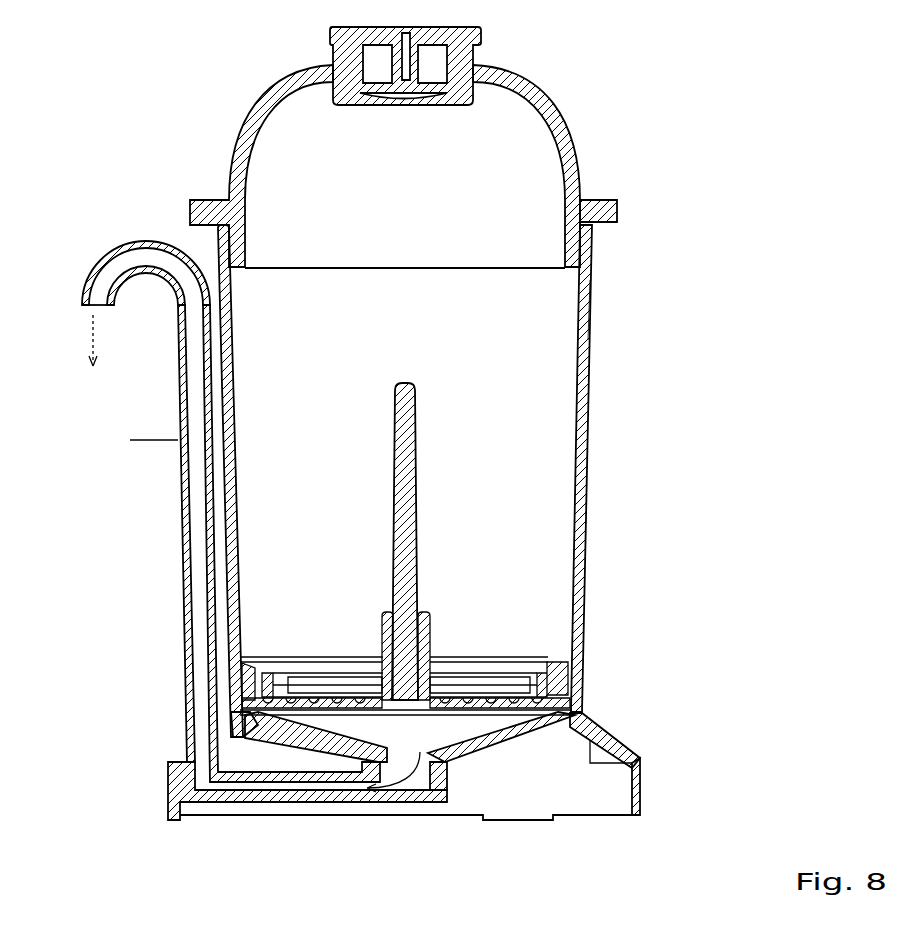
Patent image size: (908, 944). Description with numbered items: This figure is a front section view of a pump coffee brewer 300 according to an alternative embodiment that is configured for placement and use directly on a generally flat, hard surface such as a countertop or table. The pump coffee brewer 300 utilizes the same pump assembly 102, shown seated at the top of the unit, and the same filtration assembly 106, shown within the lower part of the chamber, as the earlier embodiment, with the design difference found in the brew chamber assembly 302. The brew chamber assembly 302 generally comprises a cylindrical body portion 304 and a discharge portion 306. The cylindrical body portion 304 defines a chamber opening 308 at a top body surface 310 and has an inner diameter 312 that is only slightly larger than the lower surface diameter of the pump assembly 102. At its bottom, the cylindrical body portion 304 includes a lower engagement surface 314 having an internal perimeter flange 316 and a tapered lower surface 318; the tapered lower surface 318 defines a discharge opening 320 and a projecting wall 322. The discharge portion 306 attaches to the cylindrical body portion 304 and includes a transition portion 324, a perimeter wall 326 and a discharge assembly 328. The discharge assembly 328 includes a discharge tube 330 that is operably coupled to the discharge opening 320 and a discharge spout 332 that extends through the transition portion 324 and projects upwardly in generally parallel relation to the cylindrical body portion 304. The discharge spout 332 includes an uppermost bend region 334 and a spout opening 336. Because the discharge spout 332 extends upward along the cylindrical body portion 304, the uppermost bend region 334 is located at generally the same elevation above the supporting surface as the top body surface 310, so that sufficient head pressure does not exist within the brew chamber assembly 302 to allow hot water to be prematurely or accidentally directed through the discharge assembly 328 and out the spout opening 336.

The pump assembly 102 is at (576, 148).
The filtration assembly 106 is at (417, 513).
The pump coffee brewer 300 is at (763, 393).
The brew chamber assembly 302 is at (590, 362).
The cylindrical body portion 304 is at (592, 305).
The discharge portion 306 is at (640, 757).
The chamber opening 308 is at (405, 277).
The top body surface 310 is at (590, 222).
The inner diameter 312 is at (566, 340).
The lower engagement surface 314 is at (572, 711).
The internal perimeter flange 316 is at (247, 708).
The tapered lower surface 318 is at (300, 733).
The discharge opening 320 is at (402, 752).
The projecting wall 322 is at (435, 777).
The transition portion 324 is at (610, 742).
The perimeter wall 326 is at (642, 797).
The discharge assembly 328 is at (188, 620).
The discharge tube 330 is at (265, 803).
The discharge spout 332 is at (183, 528).
The uppermost bend region 334 is at (141, 246).
The spout opening 336 is at (97, 307).